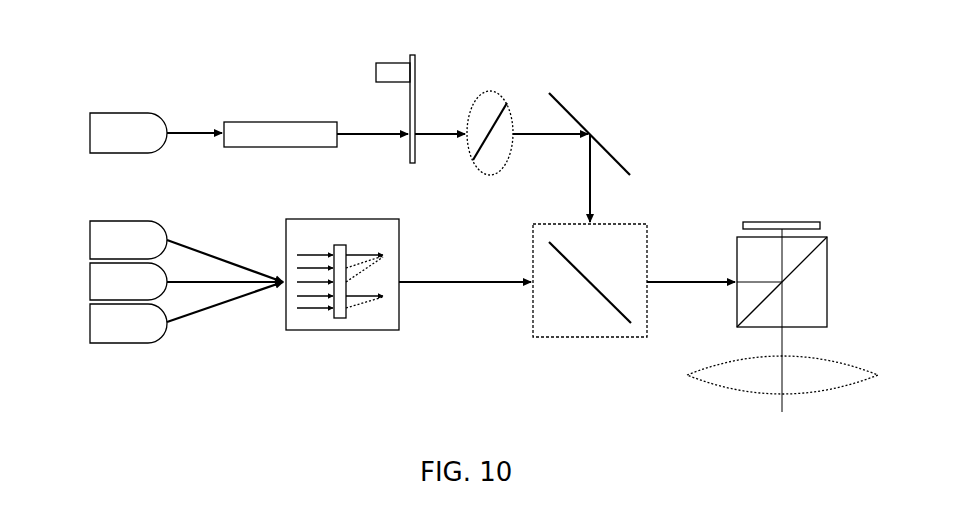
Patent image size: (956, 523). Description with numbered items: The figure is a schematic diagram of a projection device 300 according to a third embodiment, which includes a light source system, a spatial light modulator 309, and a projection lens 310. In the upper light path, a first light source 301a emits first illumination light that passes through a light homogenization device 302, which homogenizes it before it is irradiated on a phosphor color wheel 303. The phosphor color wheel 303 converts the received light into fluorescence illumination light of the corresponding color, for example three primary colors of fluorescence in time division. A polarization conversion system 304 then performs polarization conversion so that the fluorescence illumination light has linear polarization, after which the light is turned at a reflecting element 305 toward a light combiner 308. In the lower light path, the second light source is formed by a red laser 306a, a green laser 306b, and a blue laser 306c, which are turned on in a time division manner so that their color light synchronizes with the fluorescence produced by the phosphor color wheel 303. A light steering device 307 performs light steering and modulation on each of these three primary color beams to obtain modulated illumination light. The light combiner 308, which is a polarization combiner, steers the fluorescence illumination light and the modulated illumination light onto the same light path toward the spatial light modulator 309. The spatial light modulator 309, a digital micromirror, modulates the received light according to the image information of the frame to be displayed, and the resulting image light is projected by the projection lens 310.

The projection device 300 is at (749, 93).
The first light source 301a is at (118, 112).
The light homogenization device 302 is at (283, 120).
The phosphor color wheel 303 is at (392, 60).
The polarization conversion system 304 is at (490, 90).
The mirror 305 is at (563, 103).
The red laser 306a is at (88, 240).
The green laser 306b is at (88, 282).
The blue laser 306c is at (88, 322).
The light steering device 307 is at (340, 333).
The light combiner 308 is at (585, 340).
The spatial light modulator 309 is at (792, 218).
The projection lens 310 is at (855, 358).